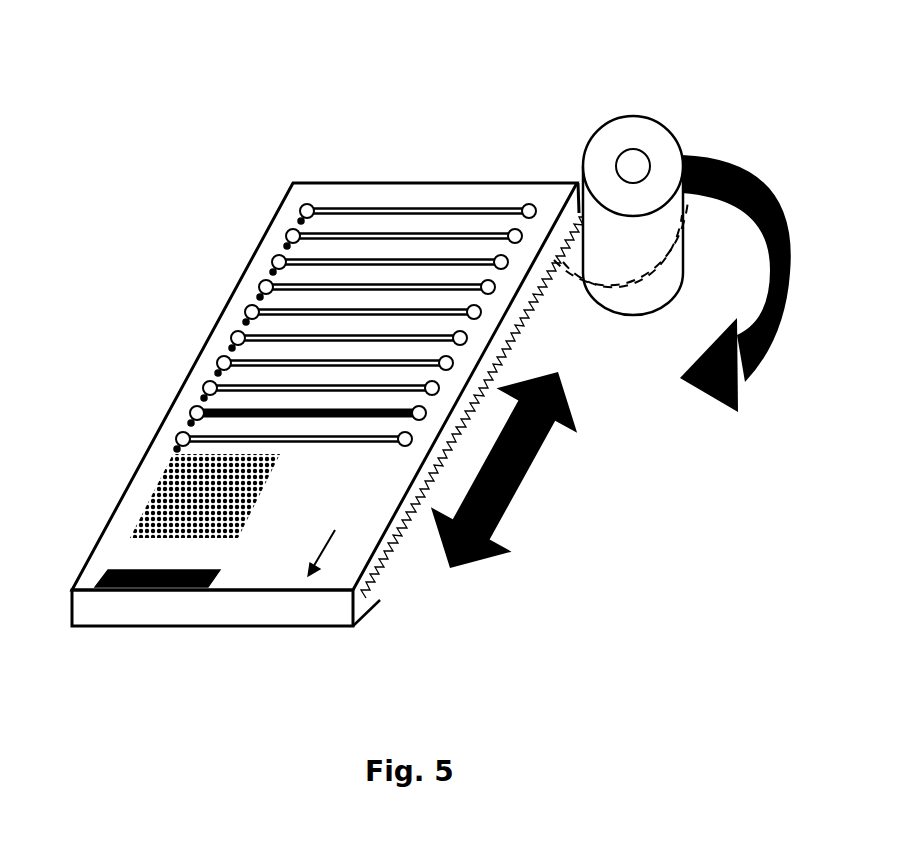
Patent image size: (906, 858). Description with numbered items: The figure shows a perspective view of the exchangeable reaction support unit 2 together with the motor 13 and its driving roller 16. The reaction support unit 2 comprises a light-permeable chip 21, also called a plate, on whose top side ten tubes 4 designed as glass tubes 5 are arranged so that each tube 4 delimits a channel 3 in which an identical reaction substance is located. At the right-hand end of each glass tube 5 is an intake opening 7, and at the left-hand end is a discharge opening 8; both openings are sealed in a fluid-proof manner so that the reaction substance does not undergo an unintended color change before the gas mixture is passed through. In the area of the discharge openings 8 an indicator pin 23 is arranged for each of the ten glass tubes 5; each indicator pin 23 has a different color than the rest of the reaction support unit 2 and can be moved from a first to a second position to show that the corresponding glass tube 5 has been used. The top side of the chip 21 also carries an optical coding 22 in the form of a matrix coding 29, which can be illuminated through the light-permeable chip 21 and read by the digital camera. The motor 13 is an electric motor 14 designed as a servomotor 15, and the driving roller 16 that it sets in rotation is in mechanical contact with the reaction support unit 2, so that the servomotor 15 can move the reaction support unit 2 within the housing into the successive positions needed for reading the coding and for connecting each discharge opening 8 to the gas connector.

The reaction support unit 2 is at (410, 387).
The channel 3 is at (375, 247).
The tube 4 is at (375, 247).
The glass tube 5 is at (470, 233).
The intake opening 7 is at (530, 204).
The discharge opening 8 is at (302, 205).
The motor 13 is at (687, 215).
The electric motor 14 is at (687, 215).
The servomotor 15 is at (633, 158).
The driving roller 16 is at (627, 328).
The chip 21 is at (390, 183).
The optical coding 22 is at (165, 472).
The indicator pin 23 is at (298, 222).
The matrix coding 29 is at (170, 458).